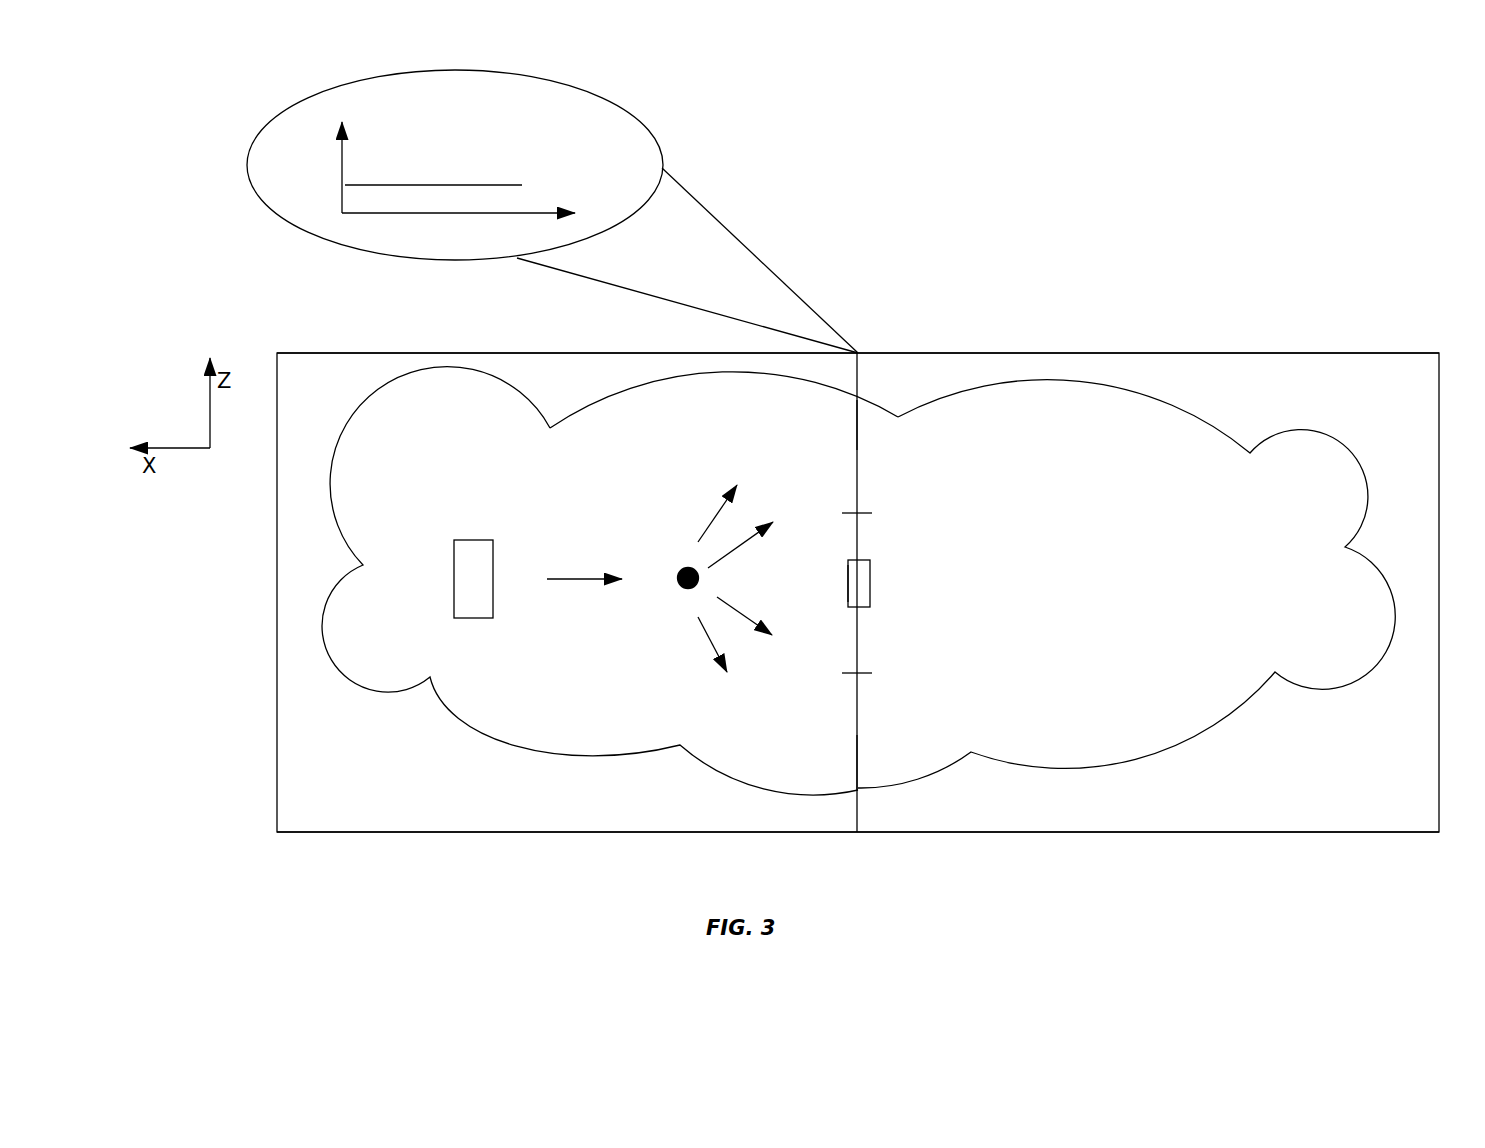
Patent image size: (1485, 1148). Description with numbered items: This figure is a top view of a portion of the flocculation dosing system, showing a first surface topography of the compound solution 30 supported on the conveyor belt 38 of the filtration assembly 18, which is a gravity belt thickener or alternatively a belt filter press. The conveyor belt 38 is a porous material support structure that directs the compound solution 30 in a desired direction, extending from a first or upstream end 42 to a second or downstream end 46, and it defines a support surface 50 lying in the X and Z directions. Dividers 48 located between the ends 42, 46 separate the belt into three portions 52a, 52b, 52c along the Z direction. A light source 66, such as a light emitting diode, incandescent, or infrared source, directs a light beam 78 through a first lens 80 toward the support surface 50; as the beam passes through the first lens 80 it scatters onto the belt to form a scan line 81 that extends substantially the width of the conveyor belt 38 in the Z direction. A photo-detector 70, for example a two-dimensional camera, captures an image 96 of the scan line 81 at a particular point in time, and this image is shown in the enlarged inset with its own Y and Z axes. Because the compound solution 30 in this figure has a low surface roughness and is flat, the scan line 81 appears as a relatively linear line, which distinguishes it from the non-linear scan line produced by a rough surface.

The filtration assembly 18 is at (1002, 257).
The compound solution 30 is at (1190, 753).
The conveyor belt 38 is at (357, 833).
The first end 42 is at (304, 324).
The second end 46 is at (1403, 312).
The dividers 48 is at (852, 510).
The support surface 50 is at (557, 785).
The first portion 52a is at (868, 427).
The second portion 52b is at (888, 587).
The third portion 52c is at (868, 760).
The light source 66 is at (473, 618).
The photo-detector 70 is at (848, 582).
The light beam 78 is at (588, 576).
The first lens 80 is at (685, 590).
The scan line 81 is at (858, 792).
The image 96 is at (603, 98).